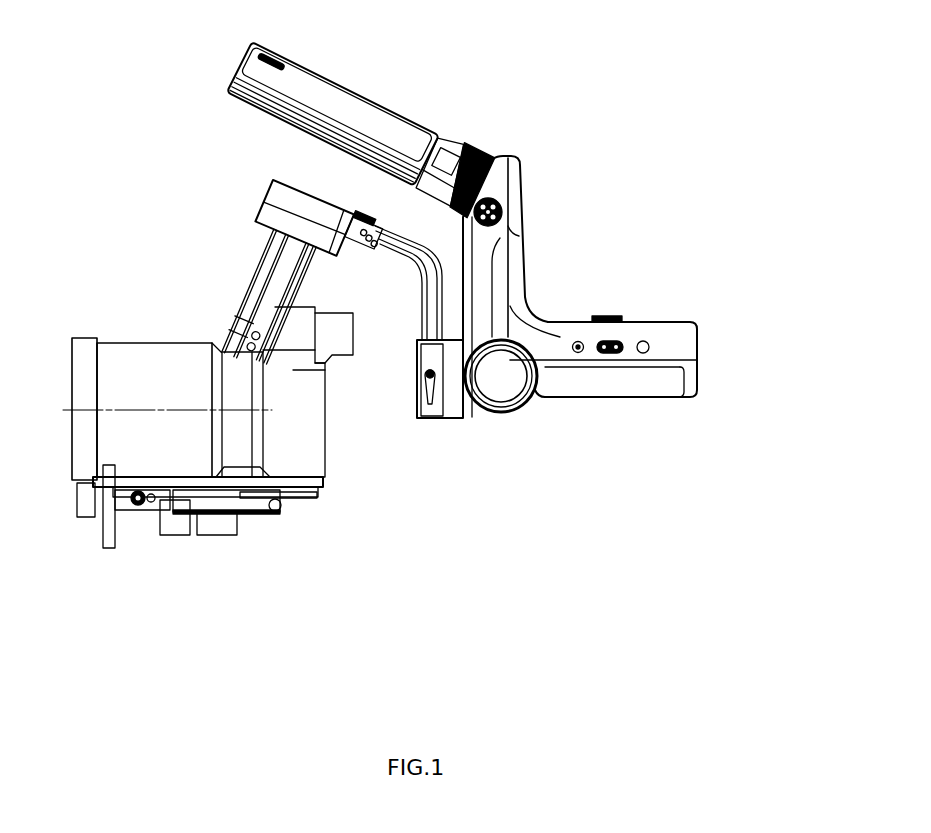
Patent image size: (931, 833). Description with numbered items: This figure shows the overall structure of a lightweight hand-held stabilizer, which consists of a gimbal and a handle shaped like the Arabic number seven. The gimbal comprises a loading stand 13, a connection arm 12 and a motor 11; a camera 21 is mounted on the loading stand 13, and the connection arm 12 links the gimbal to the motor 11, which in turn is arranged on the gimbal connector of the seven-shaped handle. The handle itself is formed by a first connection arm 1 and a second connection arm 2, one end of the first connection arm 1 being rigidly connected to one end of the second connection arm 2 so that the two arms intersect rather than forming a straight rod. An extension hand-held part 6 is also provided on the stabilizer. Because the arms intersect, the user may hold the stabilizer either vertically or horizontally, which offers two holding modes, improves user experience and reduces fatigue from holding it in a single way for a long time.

The first connection arm 1 is at (663, 337).
The second connection arm 2 is at (507, 183).
The extension hand-held part 6 is at (363, 110).
The motor 11 is at (450, 403).
The connection arm 12 is at (355, 243).
The loading stand 13 is at (228, 535).
The camera 21 is at (113, 418).